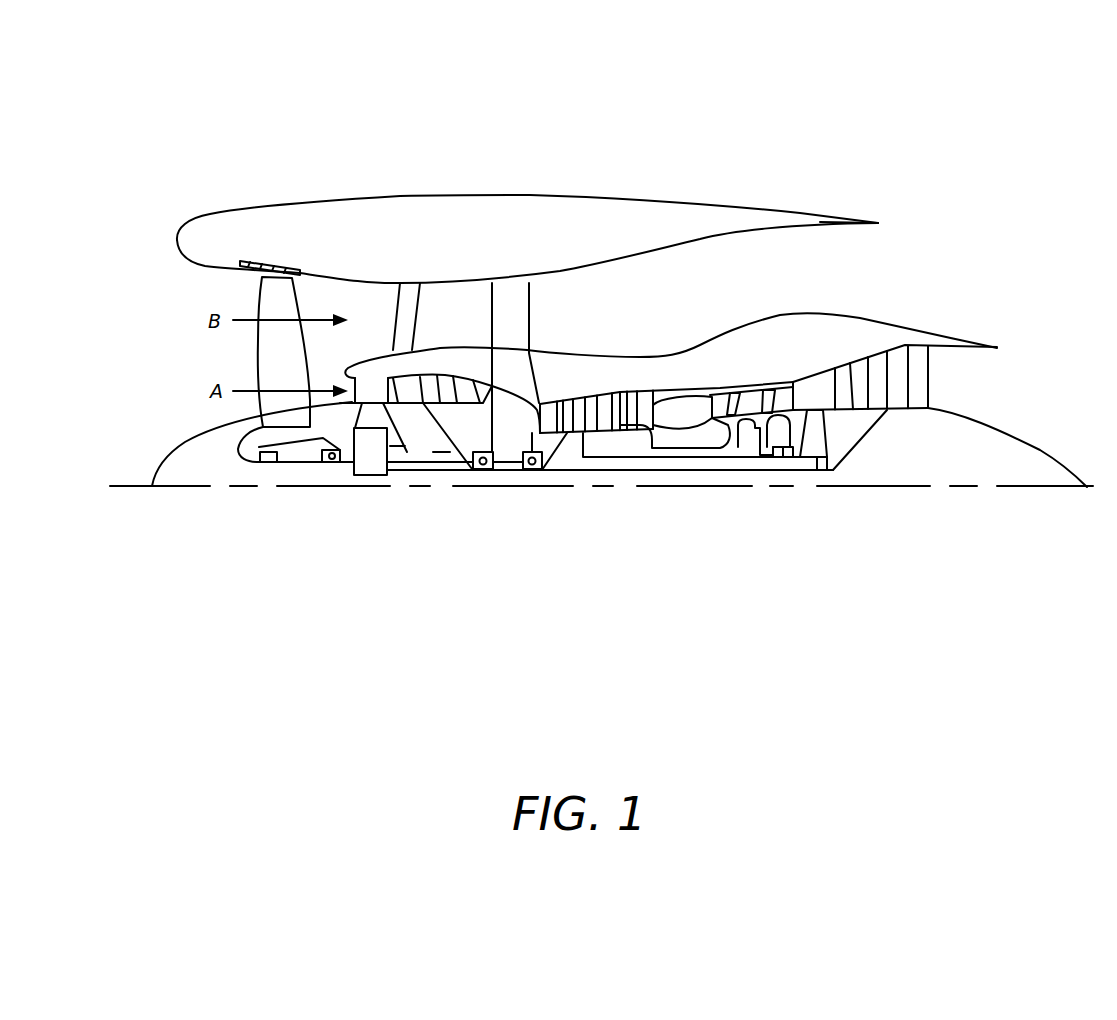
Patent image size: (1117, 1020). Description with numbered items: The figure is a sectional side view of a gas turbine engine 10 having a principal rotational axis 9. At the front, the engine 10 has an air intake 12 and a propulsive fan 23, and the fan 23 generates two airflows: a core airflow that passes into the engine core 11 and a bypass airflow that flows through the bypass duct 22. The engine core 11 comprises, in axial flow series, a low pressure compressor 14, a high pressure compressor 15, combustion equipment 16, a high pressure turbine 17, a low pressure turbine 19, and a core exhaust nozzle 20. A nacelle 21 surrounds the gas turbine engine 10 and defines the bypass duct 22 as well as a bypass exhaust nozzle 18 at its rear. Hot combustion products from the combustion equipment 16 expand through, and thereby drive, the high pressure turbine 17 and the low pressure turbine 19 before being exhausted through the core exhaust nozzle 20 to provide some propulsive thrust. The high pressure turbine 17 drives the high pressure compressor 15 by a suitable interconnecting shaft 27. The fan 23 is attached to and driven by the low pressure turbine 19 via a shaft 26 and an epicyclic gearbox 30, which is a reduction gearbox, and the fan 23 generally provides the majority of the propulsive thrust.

The principal rotational axis 9 is at (873, 490).
The gas turbine engine 10 is at (262, 213).
The engine core 11 is at (651, 374).
The air intake 12 is at (233, 361).
The low pressure compressor 14 is at (445, 383).
The high pressure compressor 15 is at (607, 417).
The combustion equipment 16 is at (683, 417).
The high pressure turbine 17 is at (747, 397).
The bypass exhaust nozzle 18 is at (872, 267).
The low pressure turbine 19 is at (897, 367).
The core exhaust nozzle 20 is at (966, 380).
The nacelle 21 is at (507, 208).
The bypass duct 22 is at (817, 284).
The propulsive fan 23 is at (265, 355).
The shaft 26 is at (595, 472).
The interconnecting shaft 27 is at (640, 460).
The epicyclic gearbox 30 is at (368, 463).